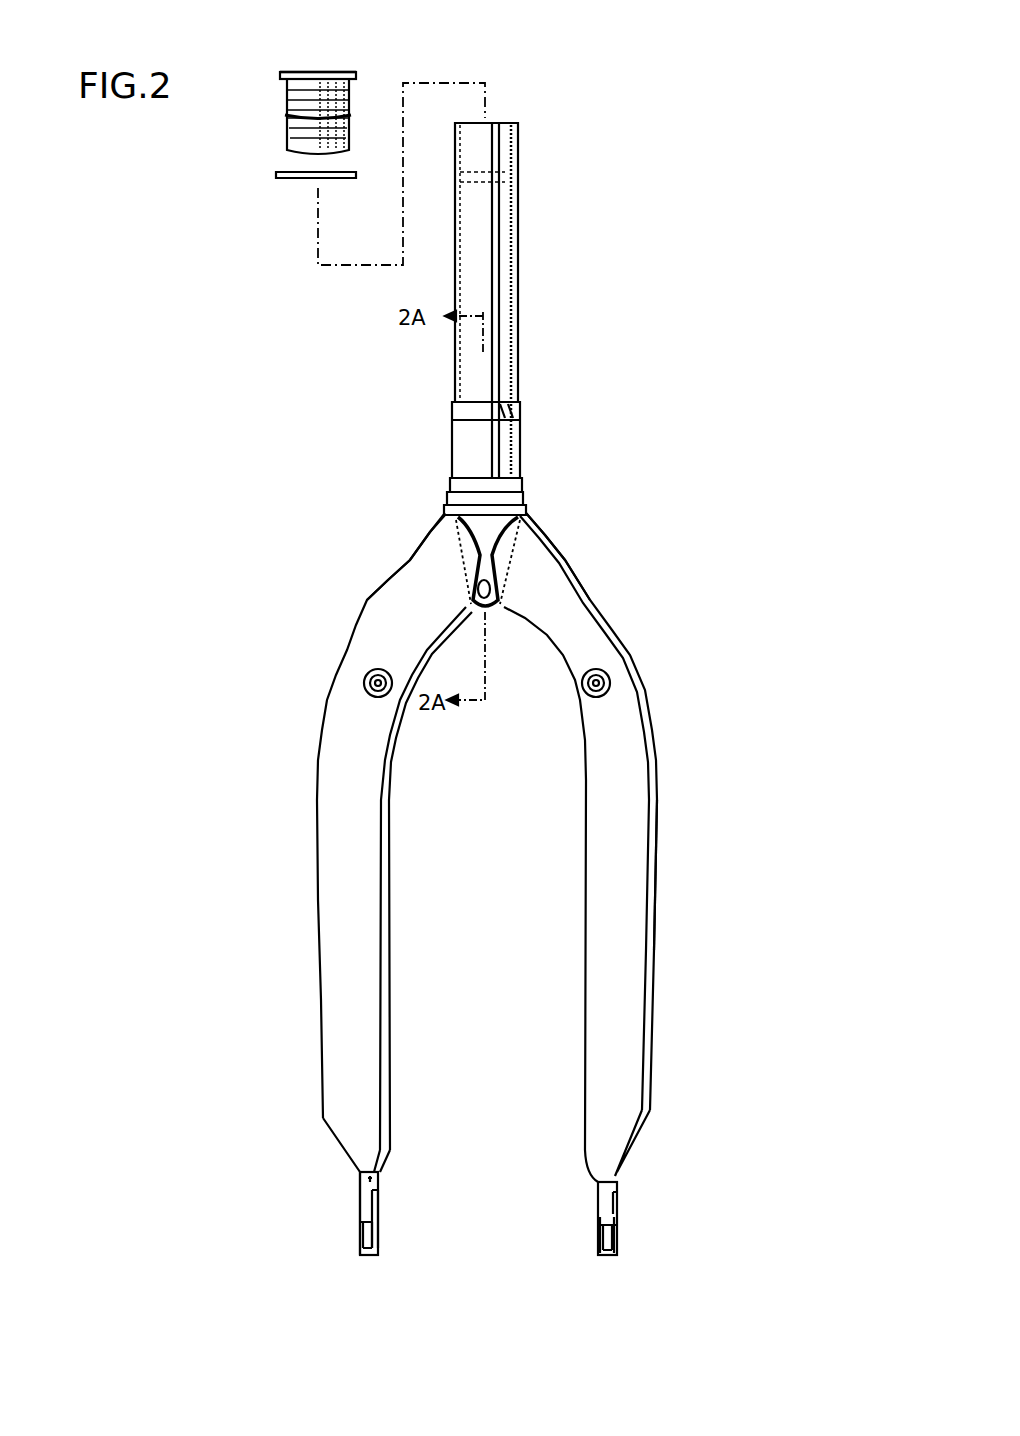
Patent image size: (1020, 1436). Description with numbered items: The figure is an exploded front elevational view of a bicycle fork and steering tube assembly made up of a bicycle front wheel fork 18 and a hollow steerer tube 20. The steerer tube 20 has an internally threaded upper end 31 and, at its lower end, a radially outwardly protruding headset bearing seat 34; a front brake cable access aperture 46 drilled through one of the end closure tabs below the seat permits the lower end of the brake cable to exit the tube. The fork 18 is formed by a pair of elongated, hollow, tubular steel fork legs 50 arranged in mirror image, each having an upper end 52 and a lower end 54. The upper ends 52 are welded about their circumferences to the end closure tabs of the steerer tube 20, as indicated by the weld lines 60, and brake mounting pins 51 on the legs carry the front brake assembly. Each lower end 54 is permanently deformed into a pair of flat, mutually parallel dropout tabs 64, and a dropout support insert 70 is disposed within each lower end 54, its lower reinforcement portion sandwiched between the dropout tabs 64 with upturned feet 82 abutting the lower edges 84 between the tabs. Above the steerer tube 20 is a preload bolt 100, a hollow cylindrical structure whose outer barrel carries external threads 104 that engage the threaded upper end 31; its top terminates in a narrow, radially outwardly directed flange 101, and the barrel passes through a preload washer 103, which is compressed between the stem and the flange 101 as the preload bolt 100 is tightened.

The bicycle front wheel fork 18 is at (652, 682).
The steerer tube 20 is at (538, 373).
The internally threaded upper end 31 is at (490, 148).
The headset bearing seat 34 is at (440, 510).
The front brake cable access aperture 46 is at (466, 597).
The fork legs 50 is at (324, 860).
The brake mounting pins 51 is at (368, 689).
The upper end 52 is at (415, 566).
The lower end 54 is at (336, 1110).
The weld lines 60 is at (465, 565).
The dropout tabs 64 is at (365, 1230).
The dropout support insert 70 is at (369, 1266).
The upturned feet 82 is at (360, 1243).
The lower edges 84 is at (376, 1233).
The preload bolt 100 is at (272, 110).
The flange 101 is at (299, 72).
The preload washer 103 is at (285, 180).
The external threads 104 is at (345, 100).